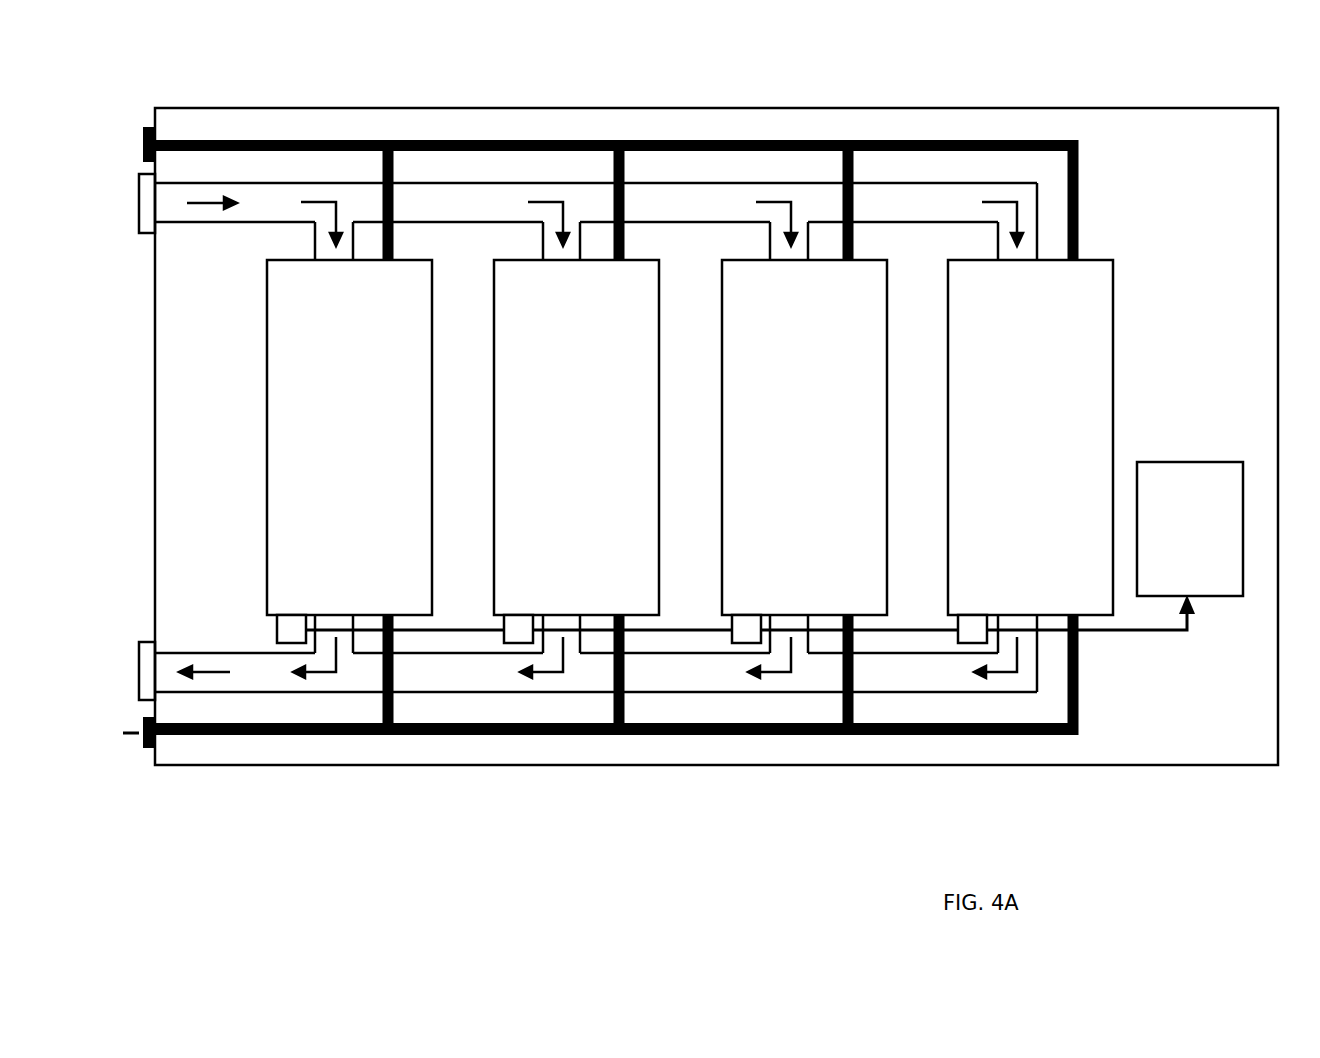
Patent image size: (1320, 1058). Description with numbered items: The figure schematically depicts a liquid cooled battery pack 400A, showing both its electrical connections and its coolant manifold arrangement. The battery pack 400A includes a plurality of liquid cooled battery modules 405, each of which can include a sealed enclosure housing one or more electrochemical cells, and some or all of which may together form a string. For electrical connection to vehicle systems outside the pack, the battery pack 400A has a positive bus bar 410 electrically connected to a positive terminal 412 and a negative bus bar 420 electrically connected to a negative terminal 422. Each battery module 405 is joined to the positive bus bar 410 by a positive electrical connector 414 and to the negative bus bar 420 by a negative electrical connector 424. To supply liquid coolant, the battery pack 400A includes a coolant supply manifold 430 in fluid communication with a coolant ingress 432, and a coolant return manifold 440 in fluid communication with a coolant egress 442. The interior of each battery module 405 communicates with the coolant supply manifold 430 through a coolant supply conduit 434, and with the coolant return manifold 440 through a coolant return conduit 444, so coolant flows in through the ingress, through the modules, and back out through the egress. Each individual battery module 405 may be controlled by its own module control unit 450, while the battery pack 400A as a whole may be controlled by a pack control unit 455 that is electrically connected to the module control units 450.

The battery pack 400A is at (716, 436).
The battery module 405 is at (1113, 334).
The positive bus bar 410 is at (500, 140).
The positive terminal 412 is at (148, 127).
The positive electrical connector 414 is at (352, 142).
The negative bus bar 420 is at (518, 735).
The negative terminal 422 is at (147, 748).
The negative electrical connector 424 is at (394, 705).
The coolant supply manifold 430 is at (670, 182).
The coolant ingress 432 is at (150, 233).
The coolant supply conduit 434 is at (770, 240).
The coolant return manifold 440 is at (697, 694).
The coolant egress 442 is at (150, 641).
The coolant return conduit 444 is at (1037, 637).
The module control unit 450 is at (762, 635).
The pack control unit 455 is at (1190, 529).